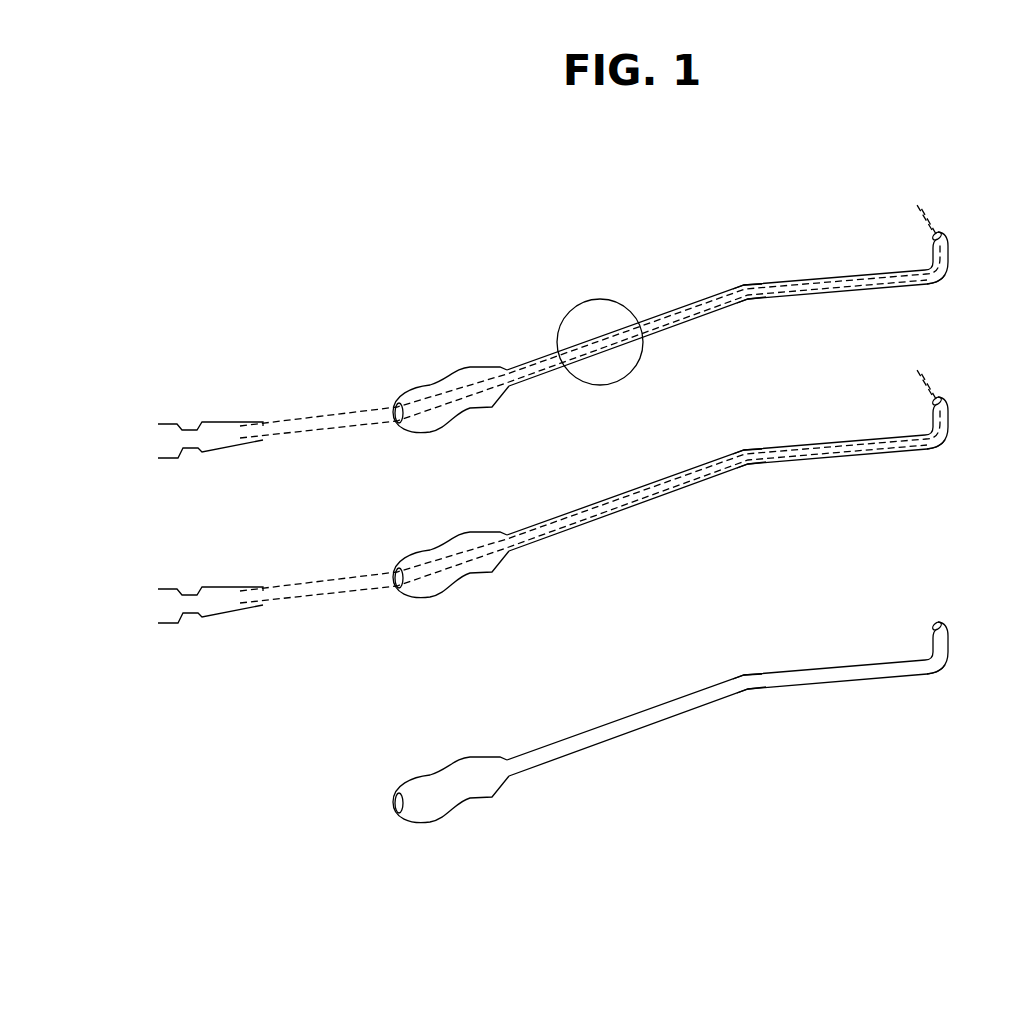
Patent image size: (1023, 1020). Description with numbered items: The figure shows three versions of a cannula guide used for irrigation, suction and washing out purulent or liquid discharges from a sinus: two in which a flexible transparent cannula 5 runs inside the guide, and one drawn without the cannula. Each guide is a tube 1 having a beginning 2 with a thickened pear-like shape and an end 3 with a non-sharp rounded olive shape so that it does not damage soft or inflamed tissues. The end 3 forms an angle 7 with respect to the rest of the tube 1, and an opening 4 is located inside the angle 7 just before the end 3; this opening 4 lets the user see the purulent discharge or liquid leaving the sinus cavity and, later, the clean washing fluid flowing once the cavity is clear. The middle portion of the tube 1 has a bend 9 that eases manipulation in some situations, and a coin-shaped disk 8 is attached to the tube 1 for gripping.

The cannula guide tube 1 is at (659, 334).
The tube beginning 2 is at (481, 406).
The tube end 3 is at (929, 238).
The opening 4 is at (929, 262).
The flexible transparent cannula 5 is at (298, 433).
The angle 7 is at (947, 268).
The coin shaped disk 8 is at (590, 325).
The bend 9 is at (748, 303).